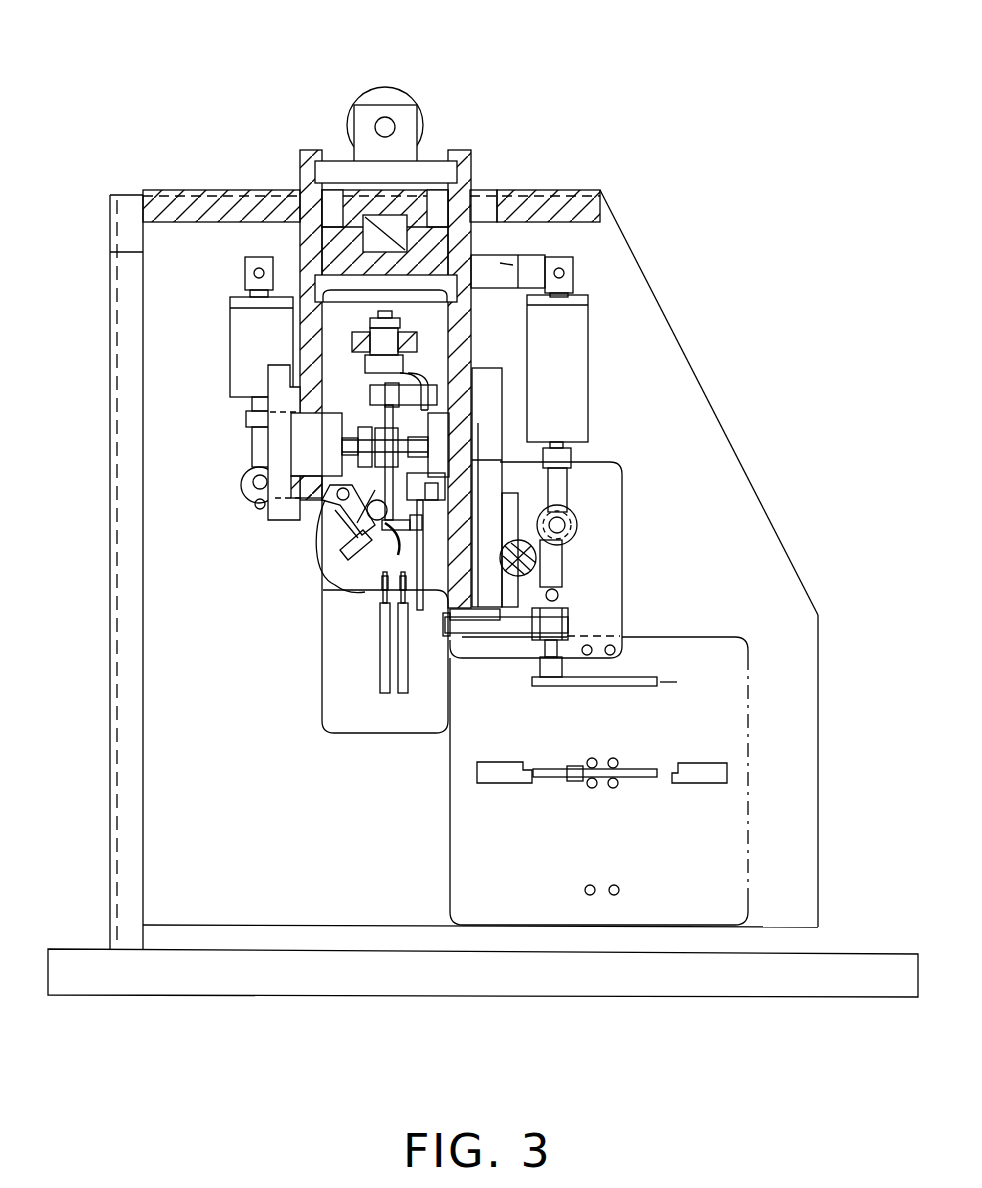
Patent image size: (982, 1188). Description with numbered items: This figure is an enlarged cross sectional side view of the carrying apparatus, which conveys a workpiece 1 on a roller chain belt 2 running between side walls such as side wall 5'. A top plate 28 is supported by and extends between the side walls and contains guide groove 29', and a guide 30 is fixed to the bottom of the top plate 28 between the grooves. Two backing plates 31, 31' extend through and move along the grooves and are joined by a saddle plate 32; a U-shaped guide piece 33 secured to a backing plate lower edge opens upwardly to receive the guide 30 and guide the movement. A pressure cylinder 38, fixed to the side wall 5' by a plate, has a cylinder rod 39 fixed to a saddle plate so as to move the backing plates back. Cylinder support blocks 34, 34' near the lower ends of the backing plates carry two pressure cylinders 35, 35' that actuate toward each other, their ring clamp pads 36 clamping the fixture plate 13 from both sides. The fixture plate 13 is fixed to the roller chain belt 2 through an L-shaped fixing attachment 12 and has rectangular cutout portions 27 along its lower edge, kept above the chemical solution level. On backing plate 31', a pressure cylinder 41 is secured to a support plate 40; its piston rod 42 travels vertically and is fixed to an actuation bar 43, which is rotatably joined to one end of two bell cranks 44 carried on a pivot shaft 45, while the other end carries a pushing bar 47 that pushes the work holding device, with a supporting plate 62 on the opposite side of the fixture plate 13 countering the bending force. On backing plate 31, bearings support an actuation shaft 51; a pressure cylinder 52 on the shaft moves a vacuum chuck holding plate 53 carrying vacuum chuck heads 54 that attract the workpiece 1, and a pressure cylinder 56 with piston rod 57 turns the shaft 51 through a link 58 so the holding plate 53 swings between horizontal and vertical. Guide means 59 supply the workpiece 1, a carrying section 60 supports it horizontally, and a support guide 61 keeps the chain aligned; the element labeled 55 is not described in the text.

The workpiece 1 is at (378, 660).
The roller chain belt 2 is at (330, 273).
The side wall 5' is at (709, 402).
The fixing attachment 12 is at (417, 375).
The fixture plate 13 is at (385, 412).
The cutout portions 27 is at (285, 200).
The top plate 28 is at (553, 190).
The guide groove 29' is at (505, 163).
The guide 30 is at (355, 308).
The backing plate 31 is at (479, 339).
The backing plate 31' is at (291, 272).
The saddle plate 32 is at (428, 161).
The U-shaped guide piece 33 is at (468, 240).
The cylinder support block 34 is at (473, 450).
The cylinder support block 34' is at (236, 442).
The pressure cylinder 35 is at (548, 369).
The pressure cylinder 35' is at (383, 476).
The ring clamp pad 36 is at (352, 442).
The pressure cylinder 38 is at (393, 88).
The cylinder rod 39 is at (377, 118).
The support plate 40 is at (298, 262).
The pressure cylinder 41 is at (230, 340).
The piston rod 42 is at (250, 445).
The actuation bar 43 is at (247, 488).
The bell crank 44 is at (327, 545).
The pivot shaft 45 is at (315, 510).
The pushing bar 47 is at (325, 593).
The actuation shaft 51 is at (563, 557).
The pressure cylinder 52 is at (547, 477).
The vacuum chuck holding plate 53 is at (495, 625).
The vacuum chuck head 54 is at (540, 667).
The bracket 55 is at (527, 253).
The pressure cylinder 56 is at (582, 327).
The piston rod 57 is at (567, 493).
The link 58 is at (572, 532).
The guide means 59 is at (498, 783).
The carrying section 60 is at (613, 780).
The support guide 61 is at (370, 324).
The supporting plate 62 is at (400, 530).